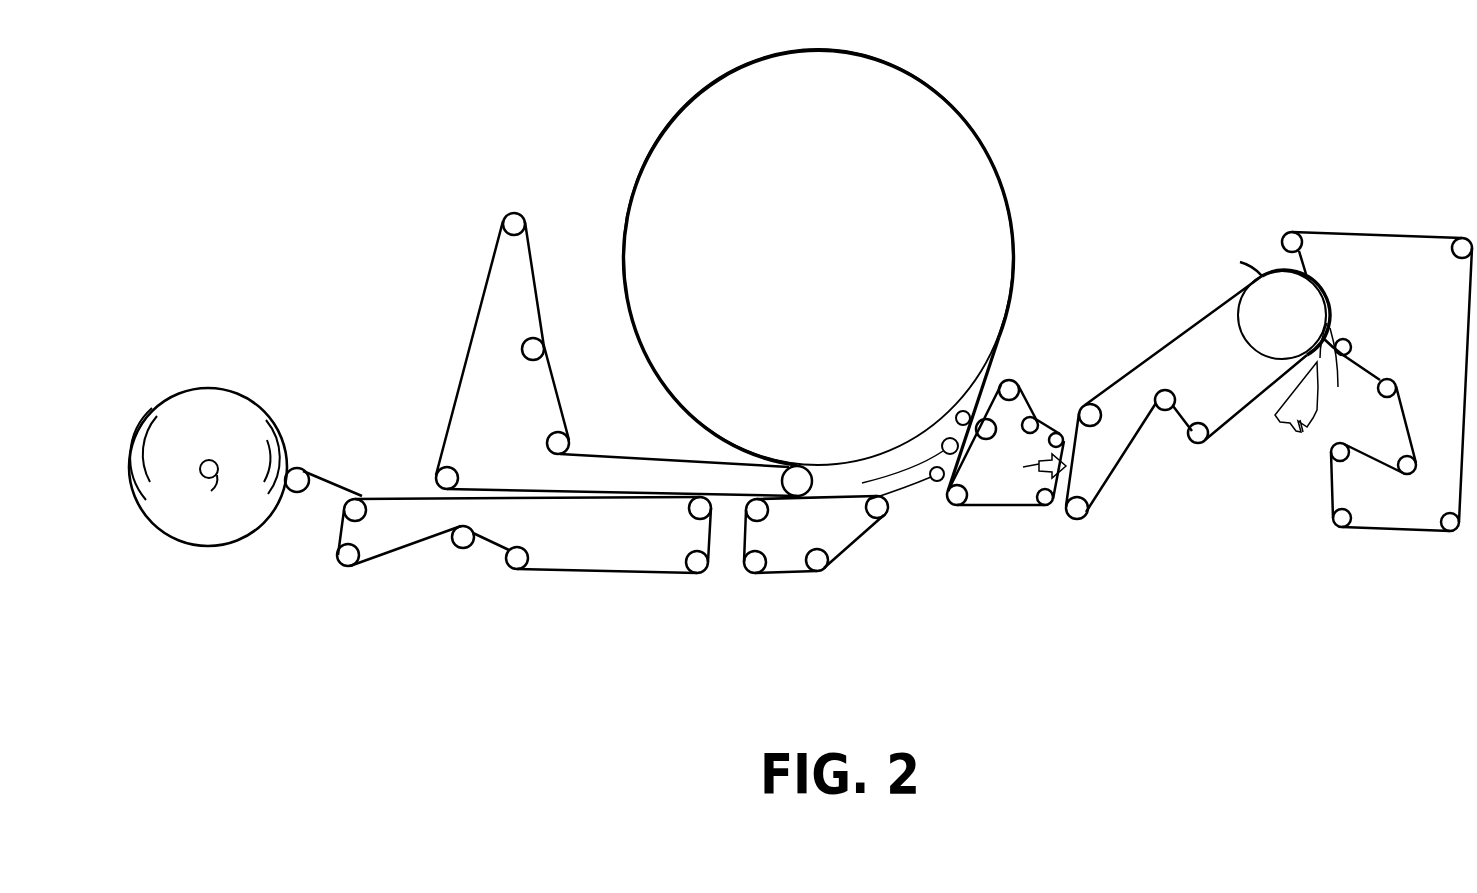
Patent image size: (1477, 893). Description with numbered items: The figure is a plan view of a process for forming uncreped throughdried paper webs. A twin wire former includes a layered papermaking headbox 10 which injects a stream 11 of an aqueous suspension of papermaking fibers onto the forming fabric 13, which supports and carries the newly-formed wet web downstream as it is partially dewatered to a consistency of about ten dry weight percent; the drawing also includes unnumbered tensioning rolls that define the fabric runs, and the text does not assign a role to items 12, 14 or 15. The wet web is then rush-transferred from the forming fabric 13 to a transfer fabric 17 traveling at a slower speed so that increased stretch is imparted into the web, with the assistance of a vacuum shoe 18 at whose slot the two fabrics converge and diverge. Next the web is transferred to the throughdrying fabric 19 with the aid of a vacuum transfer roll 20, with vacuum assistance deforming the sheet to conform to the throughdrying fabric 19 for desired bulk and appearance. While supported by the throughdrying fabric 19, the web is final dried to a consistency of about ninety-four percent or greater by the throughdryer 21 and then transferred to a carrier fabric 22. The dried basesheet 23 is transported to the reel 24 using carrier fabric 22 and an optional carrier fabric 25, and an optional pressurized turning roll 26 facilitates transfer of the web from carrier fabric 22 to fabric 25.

The layered papermaking headbox 10 is at (1304, 430).
The stream 11 is at (1338, 374).
The fabric 12 is at (1373, 233).
The forming fabric 13 is at (1227, 427).
The roll 14 is at (1300, 327).
The roll 15 is at (1252, 272).
The transfer fabric 17 is at (1050, 418).
The vacuum shoe 18 is at (1028, 471).
The throughdrying fabric 19 is at (906, 492).
The vacuum transfer roll 20 is at (822, 485).
The throughdryer 21 is at (836, 274).
The carrier fabric 22 is at (467, 348).
The dried basesheet 23 is at (728, 498).
The reel 24 is at (239, 530).
The carrier fabric 25 is at (397, 551).
The pressurized turning roll 26 is at (440, 468).